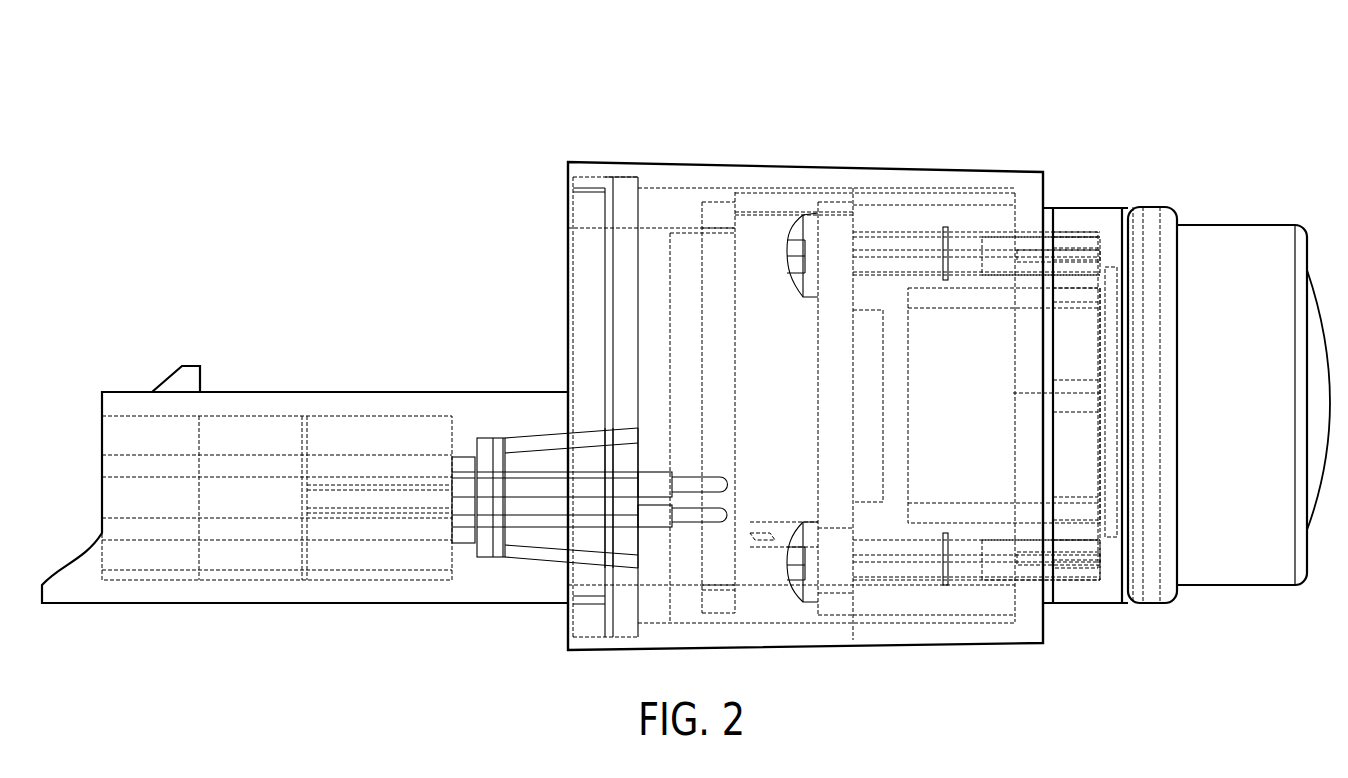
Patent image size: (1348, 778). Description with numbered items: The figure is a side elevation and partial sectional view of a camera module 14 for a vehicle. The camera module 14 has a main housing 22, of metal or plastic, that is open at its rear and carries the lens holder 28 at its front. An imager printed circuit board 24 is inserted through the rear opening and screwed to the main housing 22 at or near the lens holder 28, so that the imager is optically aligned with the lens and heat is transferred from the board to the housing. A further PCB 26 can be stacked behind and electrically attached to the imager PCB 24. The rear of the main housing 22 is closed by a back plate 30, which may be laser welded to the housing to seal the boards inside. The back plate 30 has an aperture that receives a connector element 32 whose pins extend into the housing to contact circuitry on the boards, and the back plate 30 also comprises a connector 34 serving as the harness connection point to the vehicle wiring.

The camera module 14 is at (395, 112).
The main housing 22 is at (972, 643).
The imager printed circuit board 24 is at (835, 308).
The PCB 26 is at (718, 558).
The lens holder 28 is at (1206, 496).
The back plate 30 is at (592, 290).
The connector element 32 is at (532, 500).
The connector 34 is at (287, 392).